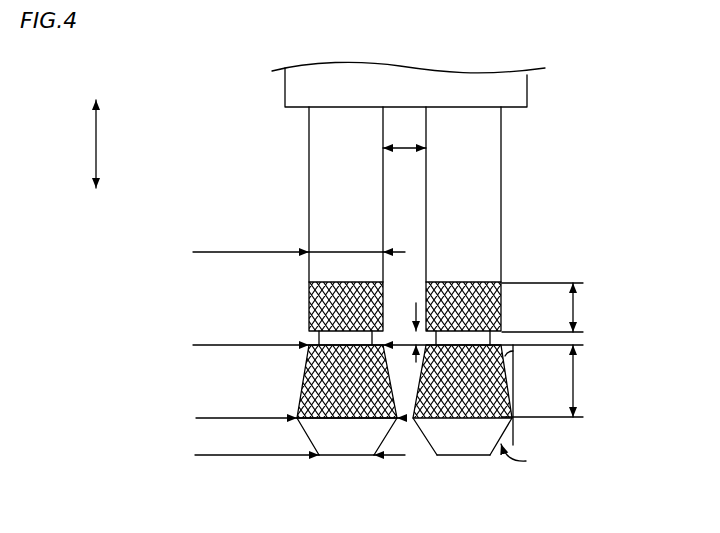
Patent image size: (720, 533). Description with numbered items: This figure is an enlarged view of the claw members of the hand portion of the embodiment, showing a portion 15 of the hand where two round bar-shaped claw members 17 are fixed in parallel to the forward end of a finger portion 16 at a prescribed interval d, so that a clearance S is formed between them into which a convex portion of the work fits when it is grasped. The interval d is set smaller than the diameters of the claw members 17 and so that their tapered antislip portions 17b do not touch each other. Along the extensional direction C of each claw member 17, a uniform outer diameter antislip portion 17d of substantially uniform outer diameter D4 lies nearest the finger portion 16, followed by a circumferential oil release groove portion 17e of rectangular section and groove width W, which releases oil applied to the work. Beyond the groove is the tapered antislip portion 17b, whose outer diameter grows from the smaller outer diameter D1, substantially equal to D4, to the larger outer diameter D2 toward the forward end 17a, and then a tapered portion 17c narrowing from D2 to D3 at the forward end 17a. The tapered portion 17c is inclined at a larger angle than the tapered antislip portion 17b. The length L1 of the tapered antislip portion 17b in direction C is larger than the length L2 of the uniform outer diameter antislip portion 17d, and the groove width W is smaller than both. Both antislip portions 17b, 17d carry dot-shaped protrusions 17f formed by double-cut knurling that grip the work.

The liquid discharge head 15 is at (240, 68).
The finger portion 16 is at (404, 92).
The claw member 17 is at (345, 166).
The forward end 17a is at (345, 458).
The tapered antislip portion 17b is at (118, 372).
The tapered portion 17c is at (313, 446).
The uniform outer diameter antislip portion 17d is at (118, 228).
The oil release groove portion 17e is at (318, 337).
The protrusion 17f is at (309, 288).
The clearance S is at (406, 224).
The direction C is at (80, 144).
The interval d is at (404, 136).
The groove width W is at (407, 332).
The smaller outer diameter D1 is at (388, 331).
The larger outer diameter D2 is at (300, 405).
The outer diameter D3 is at (300, 442).
The outer diameter D4 is at (299, 238).
The length L1 is at (554, 381).
The length L2 is at (554, 307).